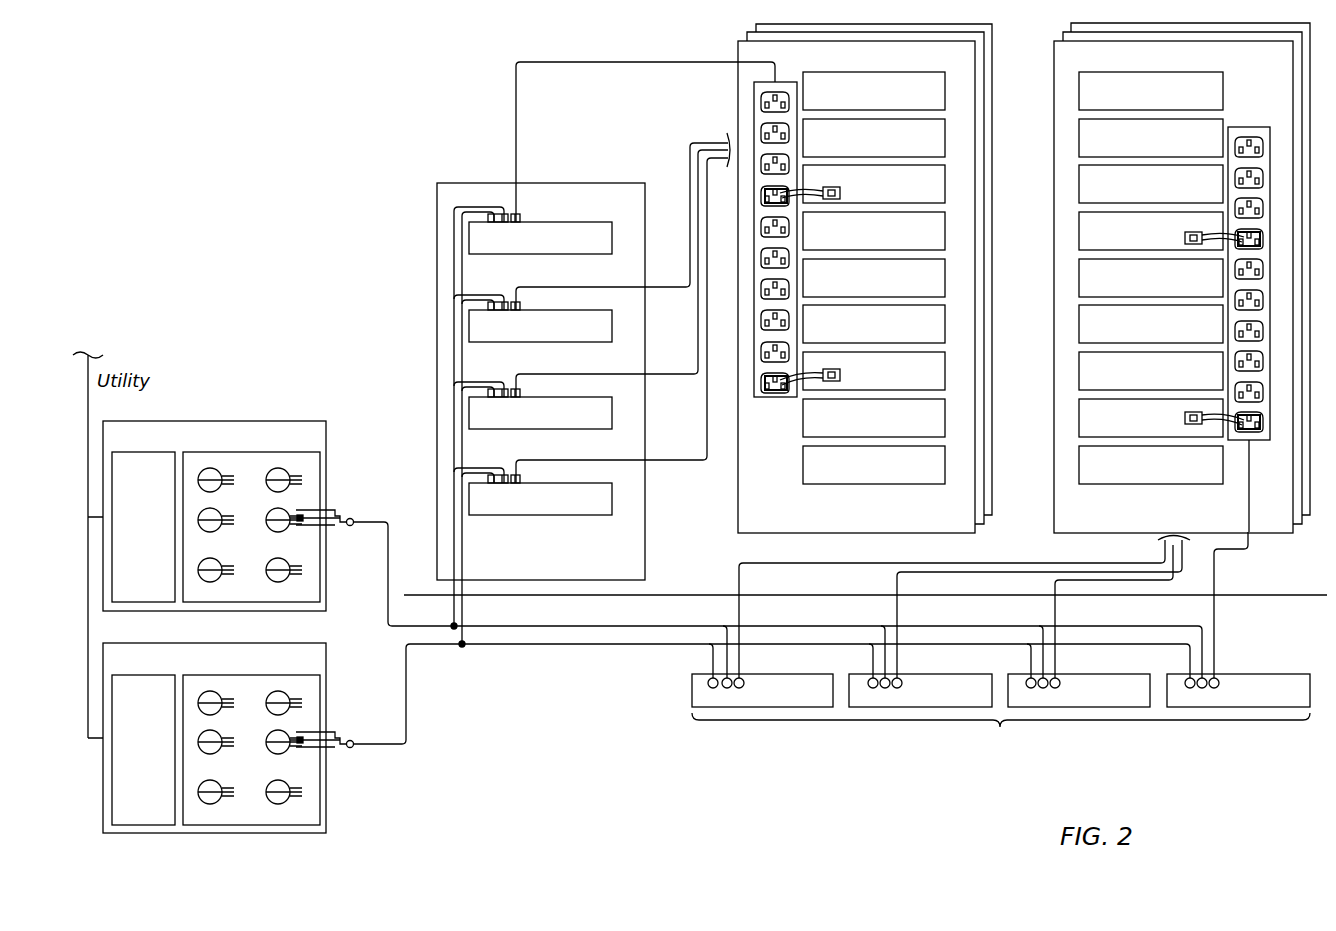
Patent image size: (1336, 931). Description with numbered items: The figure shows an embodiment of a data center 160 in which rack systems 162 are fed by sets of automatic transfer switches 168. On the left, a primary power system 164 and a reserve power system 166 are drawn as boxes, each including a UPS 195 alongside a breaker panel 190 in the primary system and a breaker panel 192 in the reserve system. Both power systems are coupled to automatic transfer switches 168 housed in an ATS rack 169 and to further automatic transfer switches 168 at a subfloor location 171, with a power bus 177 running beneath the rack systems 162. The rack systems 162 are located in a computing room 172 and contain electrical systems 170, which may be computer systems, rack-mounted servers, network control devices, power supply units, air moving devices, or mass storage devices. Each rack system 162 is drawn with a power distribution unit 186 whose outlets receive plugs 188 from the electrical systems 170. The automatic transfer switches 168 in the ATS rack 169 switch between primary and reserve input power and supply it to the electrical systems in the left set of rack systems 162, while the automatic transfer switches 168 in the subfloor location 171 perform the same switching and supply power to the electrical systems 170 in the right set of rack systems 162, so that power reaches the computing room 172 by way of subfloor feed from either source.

The data center 160 is at (306, 154).
The rack systems 162 is at (1024, 278).
The primary power system 164 is at (214, 516).
The reserve power system 166 is at (214, 738).
The automatic transfer switches 168 is at (880, 409).
The ATS rack 169 is at (541, 381).
The electrical systems 170 is at (1013, 278).
The subfloor location 171 is at (778, 633).
The computing room 172 is at (1027, 344).
The power bus 177 is at (680, 595).
The power distribution unit 186 is at (1240, 127).
The power cord plug 188 is at (830, 186).
The primary breaker panel 190 is at (312, 587).
The reserve breaker panel 192 is at (312, 807).
The UPS 195 is at (143, 638).